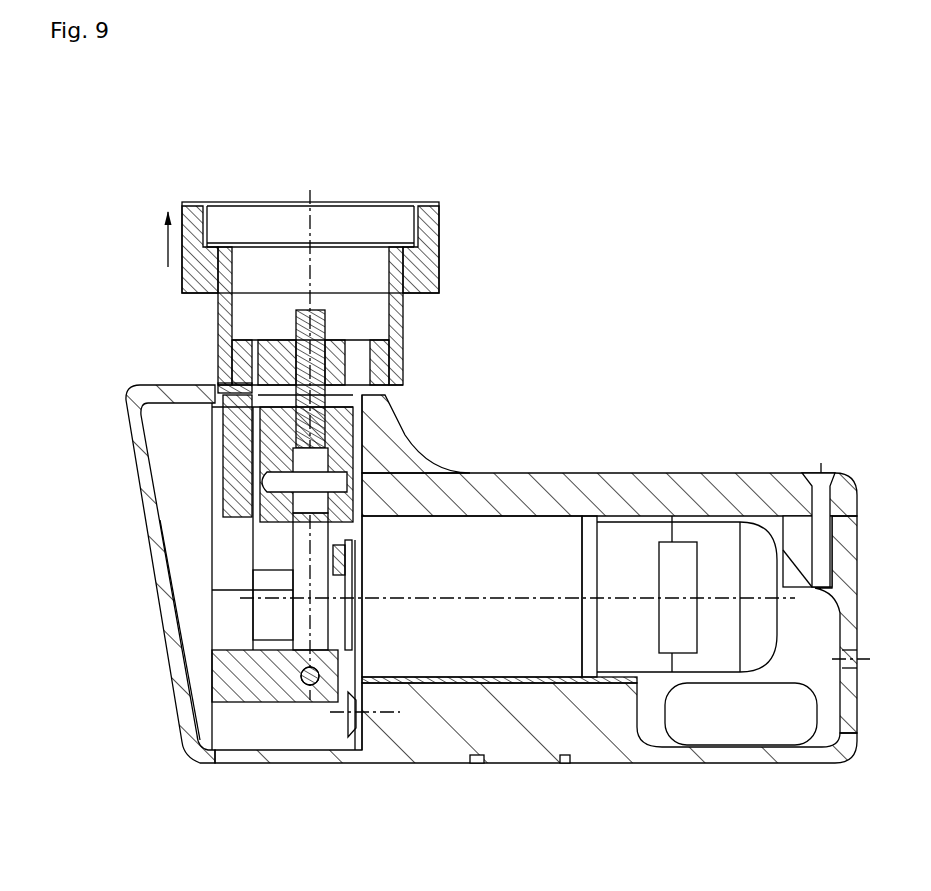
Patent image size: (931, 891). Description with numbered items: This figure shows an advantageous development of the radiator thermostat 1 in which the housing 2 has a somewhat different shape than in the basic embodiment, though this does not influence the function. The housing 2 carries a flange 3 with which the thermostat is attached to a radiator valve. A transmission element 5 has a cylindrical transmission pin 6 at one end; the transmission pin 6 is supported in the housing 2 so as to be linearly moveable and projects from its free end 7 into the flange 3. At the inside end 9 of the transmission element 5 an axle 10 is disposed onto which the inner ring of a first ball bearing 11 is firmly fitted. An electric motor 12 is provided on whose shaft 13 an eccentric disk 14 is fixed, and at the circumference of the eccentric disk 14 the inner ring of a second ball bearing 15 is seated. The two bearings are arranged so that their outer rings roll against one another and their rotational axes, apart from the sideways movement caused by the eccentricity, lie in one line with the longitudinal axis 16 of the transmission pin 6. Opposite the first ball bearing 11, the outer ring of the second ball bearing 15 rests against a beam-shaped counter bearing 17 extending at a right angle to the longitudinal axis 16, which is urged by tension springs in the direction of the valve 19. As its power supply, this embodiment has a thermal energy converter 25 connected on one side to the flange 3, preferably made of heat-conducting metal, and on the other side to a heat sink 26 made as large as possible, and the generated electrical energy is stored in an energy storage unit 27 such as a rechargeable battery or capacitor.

The radiator thermostat 1 is at (742, 194).
The housing 2 is at (623, 490).
The flange 3 is at (222, 323).
The transmission element 5 is at (318, 465).
The transmission pin 6 is at (326, 322).
The free end 7 is at (297, 307).
The inside end 9 is at (340, 487).
The axle 10 is at (567, 473).
The first ball bearing 11 is at (352, 480).
The electric motor 12 is at (545, 635).
The shaft 13 is at (270, 603).
The eccentric disk 14 is at (363, 565).
The second ball bearing 15 is at (318, 632).
The longitudinal axis 16 is at (290, 556).
The counter bearing 17 is at (250, 660).
The valve direction 19 is at (168, 252).
The thermal energy converter 25 is at (220, 384).
The heat sink 26 is at (240, 447).
The energy storage unit 27 is at (717, 718).